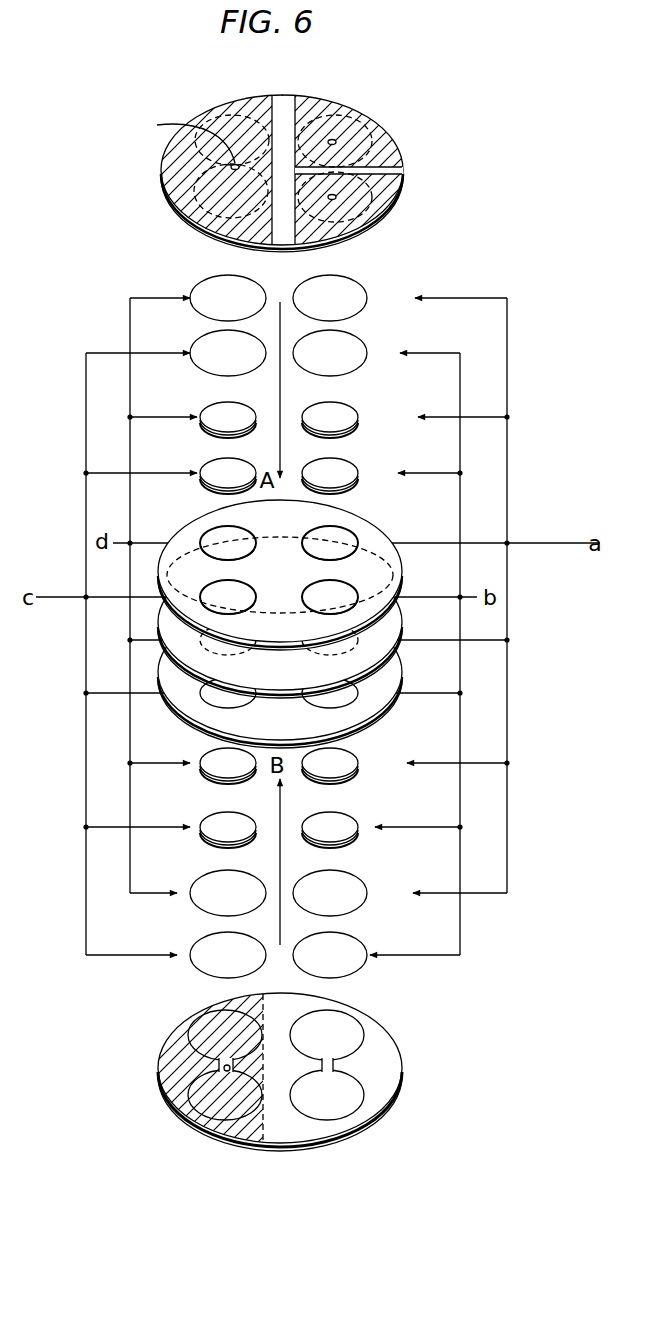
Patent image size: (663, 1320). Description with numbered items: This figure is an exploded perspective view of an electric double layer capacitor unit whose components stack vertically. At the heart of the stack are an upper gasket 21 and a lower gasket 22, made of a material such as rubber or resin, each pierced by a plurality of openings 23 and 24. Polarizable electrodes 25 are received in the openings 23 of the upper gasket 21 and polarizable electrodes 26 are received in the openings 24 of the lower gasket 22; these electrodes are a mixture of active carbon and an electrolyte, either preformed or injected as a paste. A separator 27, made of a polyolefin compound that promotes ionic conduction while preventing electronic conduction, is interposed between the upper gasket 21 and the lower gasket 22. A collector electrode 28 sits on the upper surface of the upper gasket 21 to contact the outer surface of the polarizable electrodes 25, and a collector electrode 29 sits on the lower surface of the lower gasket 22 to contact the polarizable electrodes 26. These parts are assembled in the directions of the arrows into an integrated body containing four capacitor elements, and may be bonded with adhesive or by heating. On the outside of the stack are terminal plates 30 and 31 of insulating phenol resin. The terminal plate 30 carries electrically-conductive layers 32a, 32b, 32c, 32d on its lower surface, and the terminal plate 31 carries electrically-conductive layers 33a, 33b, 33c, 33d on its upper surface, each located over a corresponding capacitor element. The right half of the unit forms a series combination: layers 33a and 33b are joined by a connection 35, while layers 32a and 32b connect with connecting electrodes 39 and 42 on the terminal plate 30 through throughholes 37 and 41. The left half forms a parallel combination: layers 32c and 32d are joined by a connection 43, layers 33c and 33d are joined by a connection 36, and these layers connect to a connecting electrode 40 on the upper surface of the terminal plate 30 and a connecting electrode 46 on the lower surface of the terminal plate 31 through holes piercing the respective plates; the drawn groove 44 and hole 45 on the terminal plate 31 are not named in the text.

The upper gasket 21 is at (403, 570).
The lower gasket 22 is at (403, 672).
The openings 23 is at (352, 538).
The openings 24 is at (355, 700).
The polarizable electrodes 25 is at (358, 418).
The polarizable electrodes 26 is at (358, 768).
The separator 27 is at (403, 622).
The collector electrode 28 is at (367, 300).
The collector electrode 29 is at (360, 912).
The terminal plate 30 is at (403, 172).
The terminal plate 31 is at (392, 1077).
The electrically-conductive layer 32a is at (365, 128).
The electrically-conductive layer 32b is at (385, 213).
The electrically-conductive layer 32c is at (198, 207).
The electrically-conductive layer 32d is at (200, 112).
The electrically-conductive layer 33a is at (365, 1030).
The electrically-conductive layer 33b is at (360, 1105).
The electrically-conductive layer 33c is at (190, 1103).
The electrically-conductive layer 33d is at (205, 1020).
The connection 35 is at (335, 1065).
The connection 36 is at (218, 1068).
The throughhole 37 is at (333, 138).
The connecting electrode 39 is at (403, 152).
The connecting electrode 40 is at (215, 103).
The throughhole 41 is at (336, 199).
The connecting electrode 42 is at (405, 187).
The connection 43 is at (228, 167).
The groove 44 is at (181, 138).
The hole 45 is at (225, 1066).
The connecting electrode 46 is at (222, 1130).